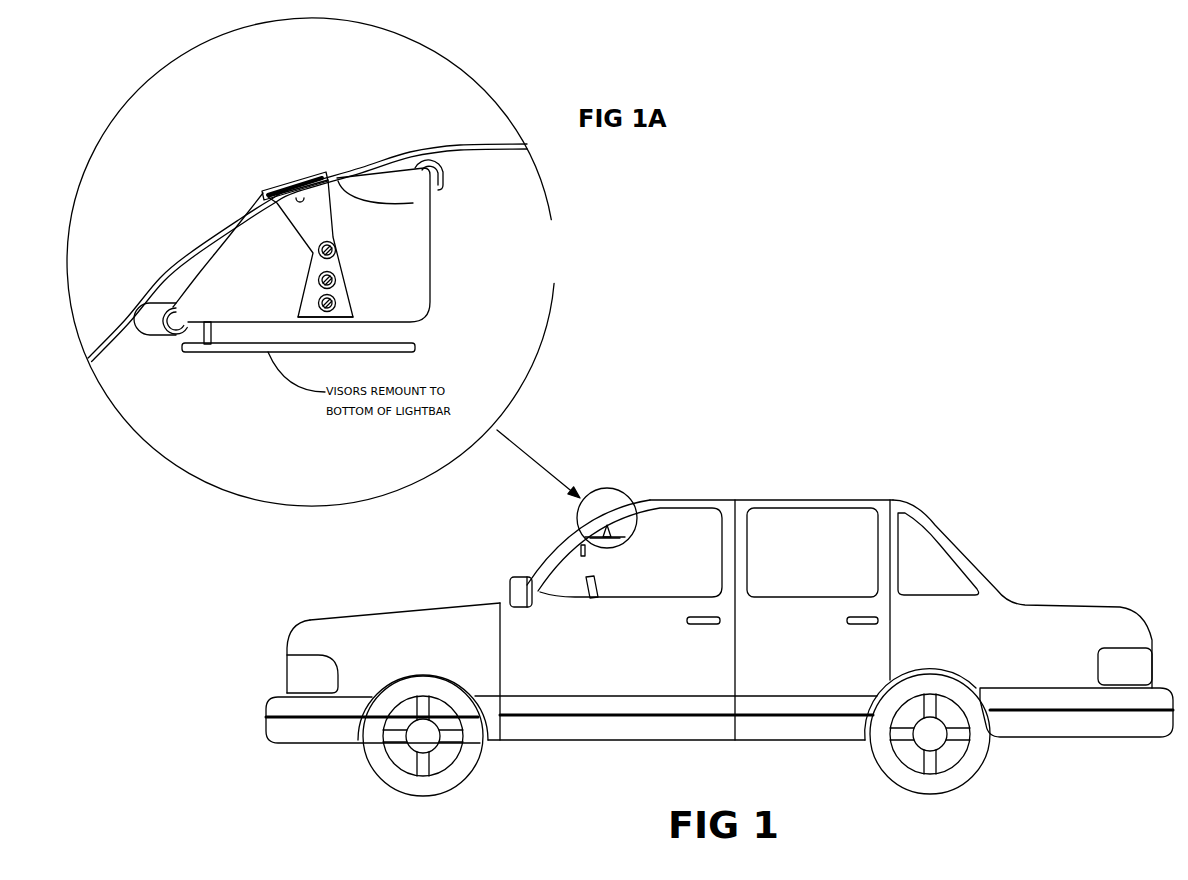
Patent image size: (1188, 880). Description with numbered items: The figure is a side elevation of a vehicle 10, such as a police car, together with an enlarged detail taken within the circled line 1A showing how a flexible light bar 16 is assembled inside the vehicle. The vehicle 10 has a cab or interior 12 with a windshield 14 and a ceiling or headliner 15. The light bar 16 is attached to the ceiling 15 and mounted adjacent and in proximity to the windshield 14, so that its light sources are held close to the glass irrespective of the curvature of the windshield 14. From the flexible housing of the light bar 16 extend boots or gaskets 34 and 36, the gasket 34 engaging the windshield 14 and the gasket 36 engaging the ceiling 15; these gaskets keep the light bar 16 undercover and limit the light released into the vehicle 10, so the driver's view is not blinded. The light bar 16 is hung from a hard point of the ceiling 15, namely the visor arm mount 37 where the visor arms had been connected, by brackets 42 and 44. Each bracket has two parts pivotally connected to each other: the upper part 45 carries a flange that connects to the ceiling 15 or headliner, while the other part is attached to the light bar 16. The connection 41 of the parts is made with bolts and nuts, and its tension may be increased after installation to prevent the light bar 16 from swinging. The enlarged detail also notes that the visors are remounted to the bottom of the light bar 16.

In FIG. 1, the vehicle 10 is at (843, 500).
In FIG. 1, the cab or interior 12 is at (608, 585).
In FIG. 1A, the windshield 14 is at (193, 243).
In FIG. 1, the windshield 14 is at (557, 553).
In FIG. 1A, the ceiling or headliner 15 is at (413, 203).
In FIG. 1, the ceiling or headliner 15 is at (650, 510).
In FIG. 1A, the flexible light bar 16 is at (465, 257).
In FIG. 1A, the boot or gasket 34 is at (148, 338).
In FIG. 1A, the boot or gasket 36 is at (432, 152).
In FIG. 1A, the visor arm mount 37 is at (303, 182).
In FIG. 1A, the connection (bolts and nuts) 41 is at (338, 251).
In FIG. 1A, the bracket 42 is at (340, 238).
In FIG. 1A, the bracket 44 is at (357, 290).
In FIG. 1A, the upper part 45 is at (295, 229).
In FIG. 1, the line 1A is at (625, 493).